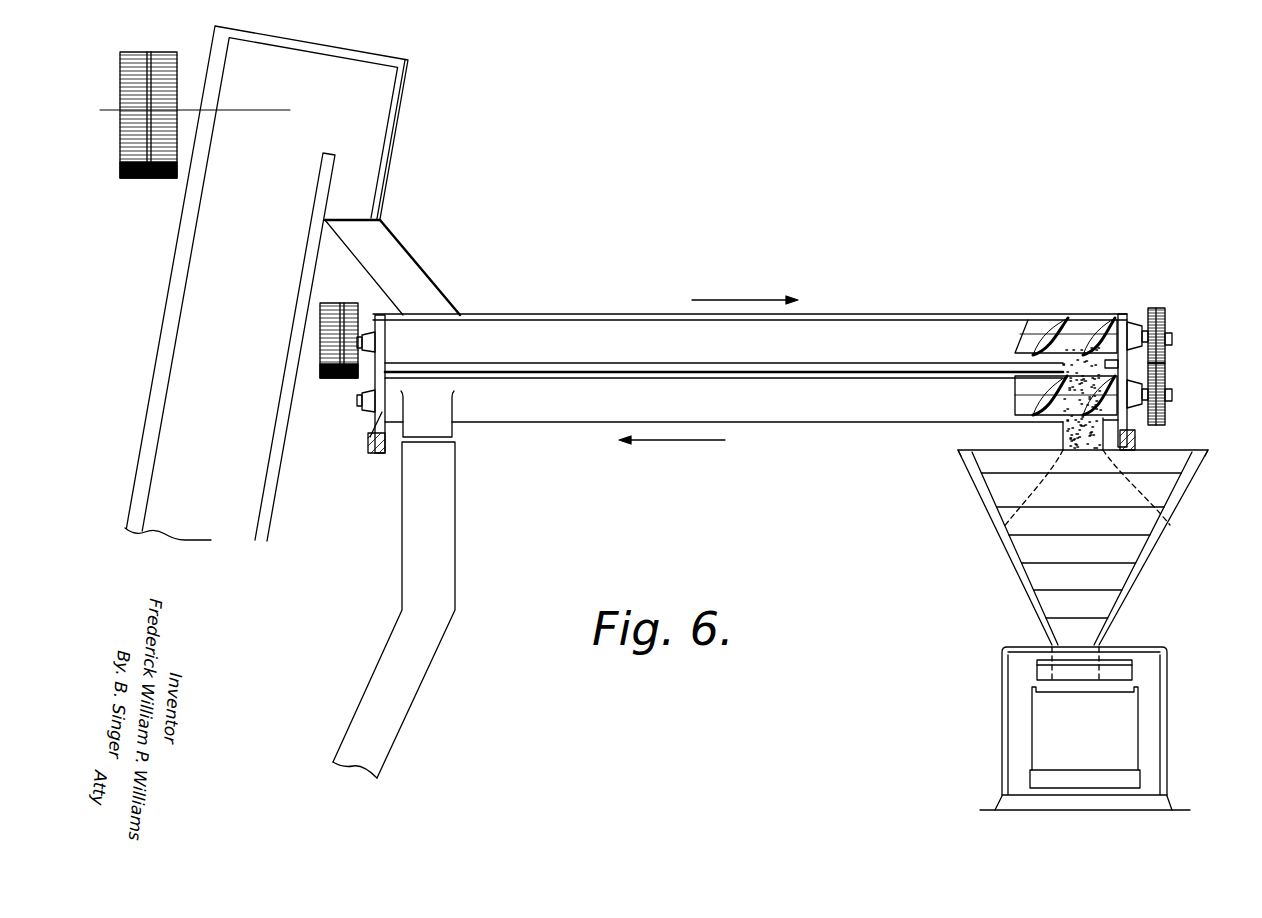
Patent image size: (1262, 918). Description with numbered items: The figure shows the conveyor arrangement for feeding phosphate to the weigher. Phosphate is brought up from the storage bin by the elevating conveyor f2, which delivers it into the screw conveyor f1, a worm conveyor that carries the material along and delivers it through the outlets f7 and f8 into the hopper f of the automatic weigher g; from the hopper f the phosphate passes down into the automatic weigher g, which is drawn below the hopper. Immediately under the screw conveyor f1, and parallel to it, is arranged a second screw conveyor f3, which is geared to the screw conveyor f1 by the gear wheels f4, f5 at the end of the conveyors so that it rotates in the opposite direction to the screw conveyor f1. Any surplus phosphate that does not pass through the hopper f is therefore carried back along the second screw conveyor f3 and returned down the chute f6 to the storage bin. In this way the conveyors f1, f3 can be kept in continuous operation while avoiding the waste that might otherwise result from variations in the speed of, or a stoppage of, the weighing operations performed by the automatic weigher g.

The hopper f is at (1143, 545).
The screw conveyor f1 is at (1060, 325).
The elevating conveyor f2 is at (195, 137).
The second screw conveyor f3 is at (1015, 413).
The gear wheel f4 is at (1164, 322).
The gear wheel f5 is at (1165, 412).
The chute f6 is at (427, 510).
The outlet f7 is at (1095, 365).
The outlet f8 is at (1163, 396).
The automatic weigher g is at (1120, 718).